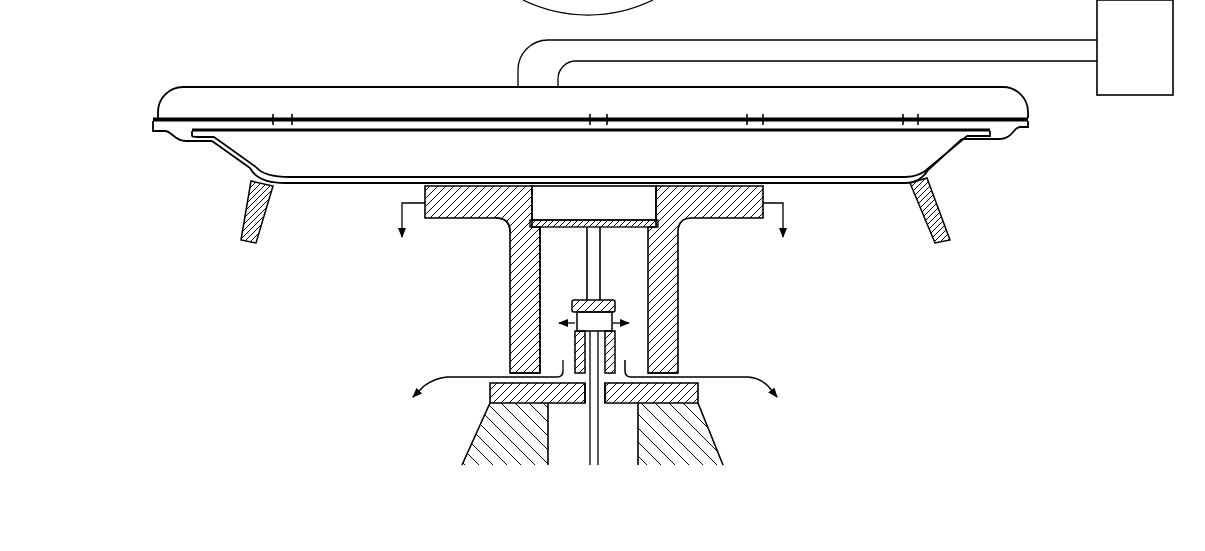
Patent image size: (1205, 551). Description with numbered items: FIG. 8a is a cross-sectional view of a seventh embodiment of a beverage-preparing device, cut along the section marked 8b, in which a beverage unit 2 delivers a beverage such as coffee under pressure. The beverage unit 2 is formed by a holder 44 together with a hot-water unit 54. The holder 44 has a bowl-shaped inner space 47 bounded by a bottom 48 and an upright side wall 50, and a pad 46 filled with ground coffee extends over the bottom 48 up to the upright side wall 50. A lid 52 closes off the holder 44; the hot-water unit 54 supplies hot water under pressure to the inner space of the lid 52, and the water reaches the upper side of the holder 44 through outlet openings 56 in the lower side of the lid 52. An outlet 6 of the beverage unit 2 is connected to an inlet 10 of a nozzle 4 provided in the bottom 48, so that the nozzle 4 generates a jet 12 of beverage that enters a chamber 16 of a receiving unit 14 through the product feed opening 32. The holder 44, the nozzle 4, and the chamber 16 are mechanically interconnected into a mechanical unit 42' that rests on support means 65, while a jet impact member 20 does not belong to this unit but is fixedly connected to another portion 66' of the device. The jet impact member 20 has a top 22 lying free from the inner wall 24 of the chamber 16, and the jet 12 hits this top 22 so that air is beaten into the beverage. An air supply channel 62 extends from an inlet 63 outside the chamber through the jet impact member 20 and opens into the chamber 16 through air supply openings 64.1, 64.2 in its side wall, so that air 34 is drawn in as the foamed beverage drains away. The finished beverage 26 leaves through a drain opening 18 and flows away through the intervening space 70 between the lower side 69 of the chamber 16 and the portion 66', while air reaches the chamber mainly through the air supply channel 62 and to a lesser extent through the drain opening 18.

The beverage unit 2 is at (1018, 198).
The nozzle 4 is at (541, 267).
The outlet 6 is at (602, 196).
The section line 8b is at (592, 234).
The inlet 10 is at (587, 226).
The jet 12 is at (585, 275).
The receiving unit 14 is at (740, 287).
The chamber 16 is at (636, 266).
The drain opening 18 is at (553, 369).
The jet impact member 20 is at (610, 338).
The top 22 is at (608, 299).
The inner wall 24 is at (590, 268).
The beverage 26 is at (413, 375).
The outlet opening 32 is at (588, 229).
The air 34 is at (591, 425).
The mechanical unit 42' is at (590, 213).
The holder 44 is at (885, 186).
The pad 46 is at (840, 178).
The bowl-shaped inner space 47 is at (248, 172).
The bottom 48 is at (303, 190).
The upright side wall 50 is at (222, 152).
The lid 52 is at (990, 93).
The hot-water unit 54 is at (1097, 22).
The outlet openings 56 is at (283, 116).
The air supply channel 62 is at (627, 362).
The inlet 63 is at (608, 410).
The air supply opening 64.1 is at (533, 308).
The air supply opening 64.2 is at (616, 312).
The support means 65 is at (260, 243).
The portion of the device 66' is at (617, 424).
The lower side 69 is at (680, 368).
The intervening space 70 is at (518, 372).